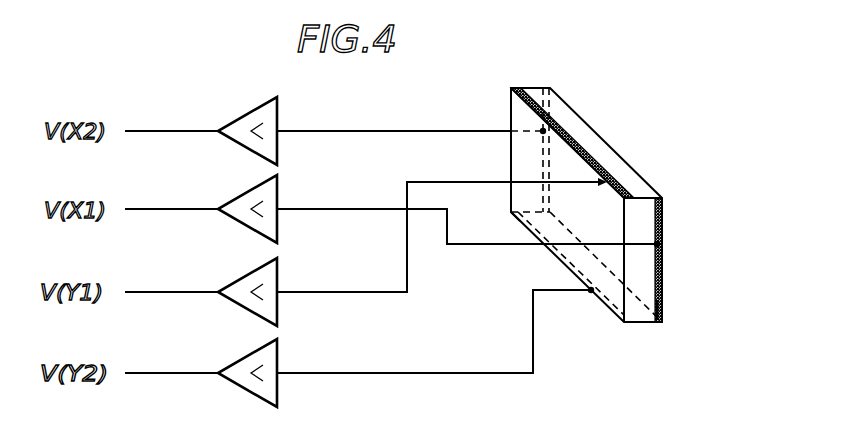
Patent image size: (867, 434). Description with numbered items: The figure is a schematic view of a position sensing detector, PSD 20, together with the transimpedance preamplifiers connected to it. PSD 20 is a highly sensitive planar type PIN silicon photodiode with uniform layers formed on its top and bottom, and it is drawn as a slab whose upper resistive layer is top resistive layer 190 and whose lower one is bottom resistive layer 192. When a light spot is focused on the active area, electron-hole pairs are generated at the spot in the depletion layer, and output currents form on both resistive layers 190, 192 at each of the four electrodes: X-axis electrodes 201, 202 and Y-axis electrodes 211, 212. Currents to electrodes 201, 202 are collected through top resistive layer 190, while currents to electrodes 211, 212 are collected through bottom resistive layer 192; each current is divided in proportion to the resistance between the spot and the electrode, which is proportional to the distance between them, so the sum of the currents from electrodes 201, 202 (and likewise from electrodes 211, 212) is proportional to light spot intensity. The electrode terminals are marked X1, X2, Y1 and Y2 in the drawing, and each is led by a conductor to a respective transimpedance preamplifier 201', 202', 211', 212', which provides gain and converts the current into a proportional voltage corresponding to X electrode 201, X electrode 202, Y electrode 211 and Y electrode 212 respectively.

The position sensing detector (PSD) 20 is at (642, 158).
The top resistive layer 190 is at (664, 217).
The bottom resistive layer 192 is at (527, 232).
The X-axis electrode 201 is at (692, 302).
The X-axis electrode 202 is at (494, 150).
The Y-axis electrode 211 is at (594, 143).
The Y-axis electrode 212 is at (555, 263).
The transimpedance preamplifier 201' is at (437, 207).
The transimpedance preamplifier 202' is at (364, 129).
The transimpedance preamplifier 211' is at (412, 252).
The transimpedance preamplifier 212' is at (406, 347).
The X1 terminal X1 is at (661, 244).
The X2 terminal X2 is at (552, 103).
The Y1 terminal Y1 is at (511, 99).
The Y2 terminal Y2 is at (606, 304).